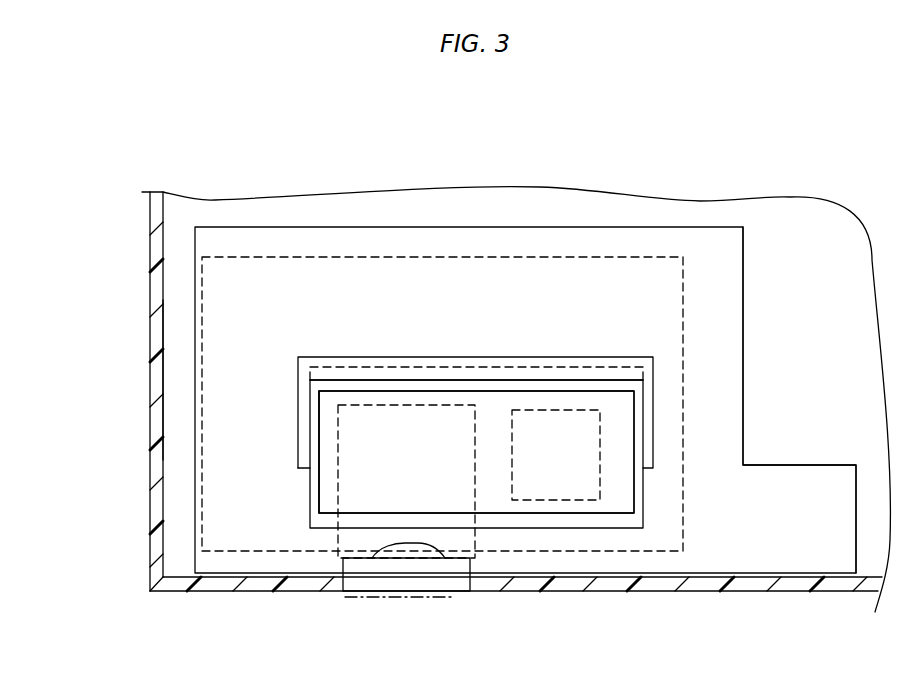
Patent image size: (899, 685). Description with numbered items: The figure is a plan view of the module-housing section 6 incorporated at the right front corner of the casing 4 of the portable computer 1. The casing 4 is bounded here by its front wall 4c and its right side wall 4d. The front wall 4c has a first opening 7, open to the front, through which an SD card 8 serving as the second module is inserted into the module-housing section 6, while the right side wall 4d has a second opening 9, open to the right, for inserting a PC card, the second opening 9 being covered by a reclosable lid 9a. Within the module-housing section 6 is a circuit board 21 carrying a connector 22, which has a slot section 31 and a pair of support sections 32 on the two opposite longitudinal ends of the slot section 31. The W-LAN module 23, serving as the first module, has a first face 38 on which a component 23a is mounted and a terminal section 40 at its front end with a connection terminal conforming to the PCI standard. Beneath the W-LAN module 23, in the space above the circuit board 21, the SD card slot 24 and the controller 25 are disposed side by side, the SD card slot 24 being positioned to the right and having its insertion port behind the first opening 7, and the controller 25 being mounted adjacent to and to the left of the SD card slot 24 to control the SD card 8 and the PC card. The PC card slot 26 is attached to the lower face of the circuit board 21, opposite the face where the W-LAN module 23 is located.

The portable computer 1 is at (737, 178).
The casing 4 is at (466, 422).
The front wall 4c is at (256, 595).
The right side wall 4d is at (152, 578).
The module-housing section 6 is at (780, 286).
The first opening 7 is at (467, 592).
The SD card 8 is at (434, 600).
The second opening 9 is at (150, 262).
The reclosable lid 9a is at (150, 395).
The circuit board 21 is at (735, 348).
The connector 22 is at (414, 368).
The W-LAN module 23 is at (637, 520).
The component 23a is at (332, 395).
The SD card slot 24 is at (340, 560).
The controller 25 is at (575, 483).
The PC card slot 26 is at (225, 508).
The slot section 31 is at (500, 374).
The support sections 32 is at (303, 423).
The first face 38 is at (621, 385).
The terminal section 40 is at (553, 373).